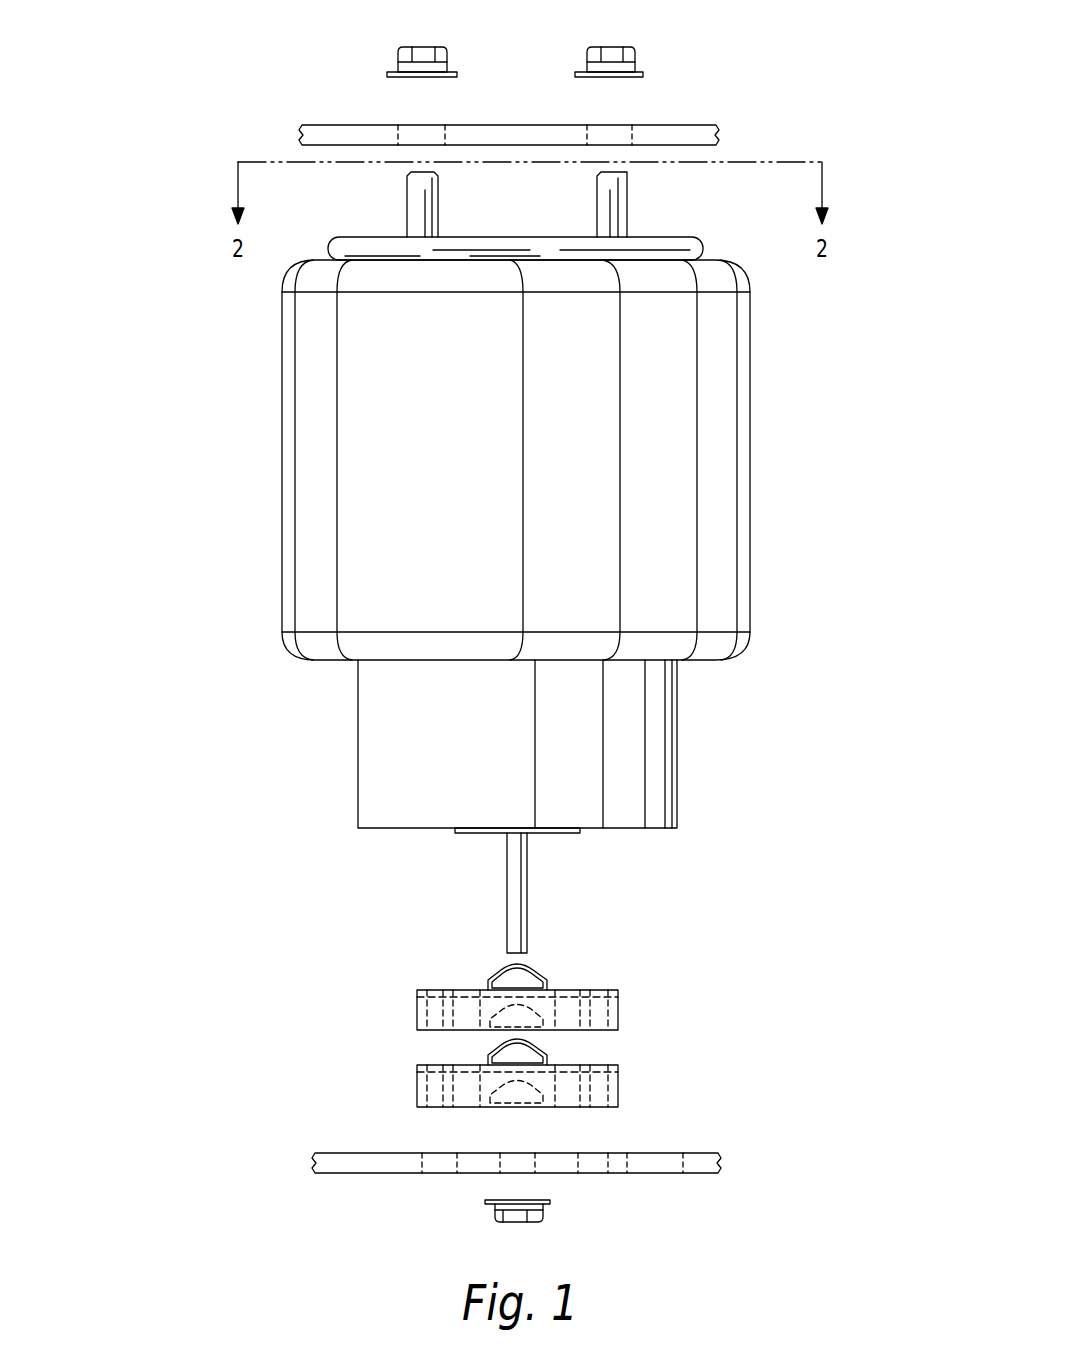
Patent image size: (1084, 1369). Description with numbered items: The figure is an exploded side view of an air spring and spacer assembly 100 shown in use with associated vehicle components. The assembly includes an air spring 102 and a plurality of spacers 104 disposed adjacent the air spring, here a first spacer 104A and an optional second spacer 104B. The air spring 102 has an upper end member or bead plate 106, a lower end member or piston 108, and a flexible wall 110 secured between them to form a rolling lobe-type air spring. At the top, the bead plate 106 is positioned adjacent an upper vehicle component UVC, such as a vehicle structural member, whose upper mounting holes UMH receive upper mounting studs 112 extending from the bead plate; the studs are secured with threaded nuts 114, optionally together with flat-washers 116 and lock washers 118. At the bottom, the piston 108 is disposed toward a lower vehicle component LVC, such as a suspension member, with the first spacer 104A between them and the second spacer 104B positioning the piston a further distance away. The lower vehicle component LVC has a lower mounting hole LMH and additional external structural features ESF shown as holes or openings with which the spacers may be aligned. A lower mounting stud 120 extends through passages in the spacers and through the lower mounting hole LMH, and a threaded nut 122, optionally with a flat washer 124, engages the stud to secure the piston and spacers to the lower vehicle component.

The air spring and spacer assembly 100 is at (206, 388).
The air spring 102 is at (251, 619).
The spacers 104 is at (528, 1024).
The first spacer 104A is at (650, 993).
The second spacer 104B is at (650, 1078).
The bead plate 106 is at (703, 240).
The piston 108 is at (677, 757).
The flexible wall 110 is at (750, 525).
The upper mounting studs 112 is at (604, 205).
The threaded nuts 114 is at (635, 60).
The flat-washers 116 is at (448, 63).
The lock washers 118 is at (387, 75).
The lower mounting stud 120 is at (528, 917).
The threaded nut 122 is at (494, 1210).
The flat washer 124 is at (552, 1203).
The upper vehicle component UVC is at (343, 125).
The upper mounting holes UMH is at (607, 133).
The lower vehicle component LVC is at (355, 1153).
The lower mounting hole LMH is at (518, 1153).
The external structural features ESF is at (438, 1175).